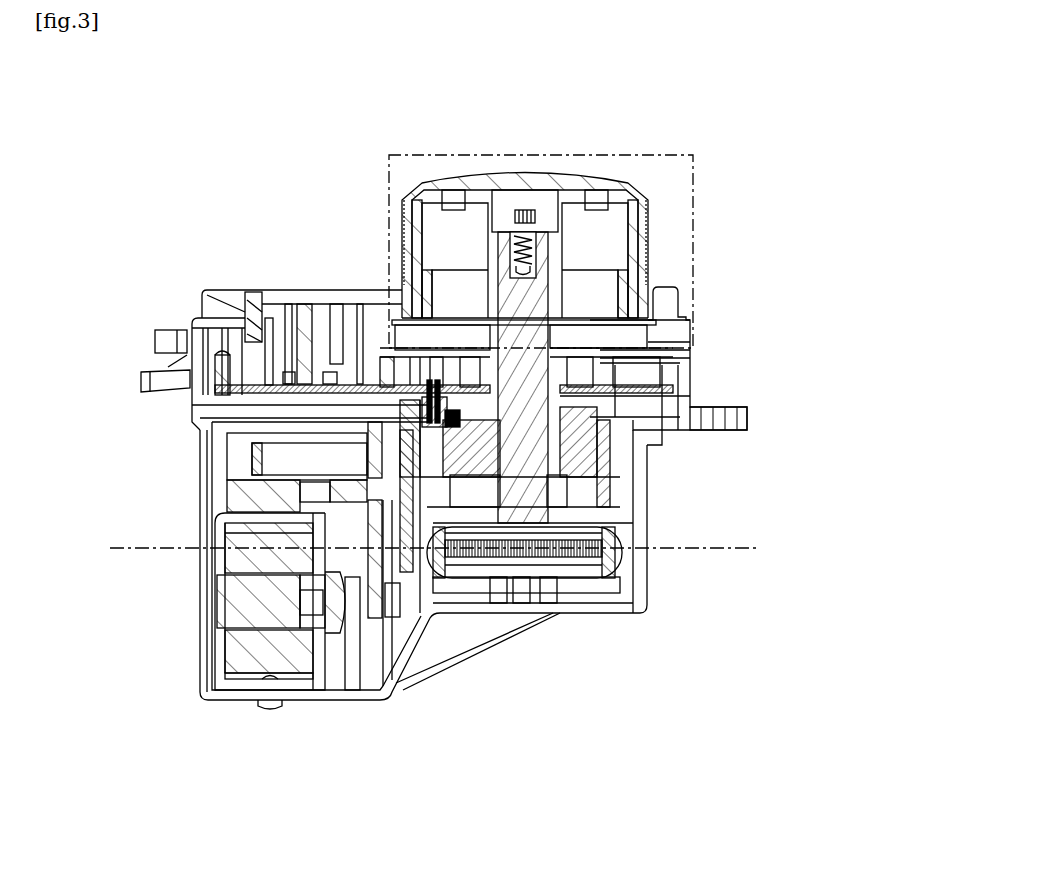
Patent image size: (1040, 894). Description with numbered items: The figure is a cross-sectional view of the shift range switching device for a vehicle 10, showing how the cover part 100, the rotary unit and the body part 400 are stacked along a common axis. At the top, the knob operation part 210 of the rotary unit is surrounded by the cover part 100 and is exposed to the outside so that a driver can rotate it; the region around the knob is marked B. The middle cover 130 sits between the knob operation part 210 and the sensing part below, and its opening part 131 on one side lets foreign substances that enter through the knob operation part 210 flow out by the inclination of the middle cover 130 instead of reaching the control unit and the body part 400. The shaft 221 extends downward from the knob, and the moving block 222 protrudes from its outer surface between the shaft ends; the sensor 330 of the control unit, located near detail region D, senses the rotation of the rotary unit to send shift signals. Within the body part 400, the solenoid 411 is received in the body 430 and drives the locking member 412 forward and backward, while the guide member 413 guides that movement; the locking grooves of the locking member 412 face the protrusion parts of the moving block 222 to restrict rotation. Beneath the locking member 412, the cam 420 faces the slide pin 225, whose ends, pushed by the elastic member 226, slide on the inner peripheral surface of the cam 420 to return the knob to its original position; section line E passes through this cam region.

The shift range switching device for a vehicle 10 is at (246, 72).
The cover part 100 is at (216, 282).
The middle cover 130 is at (620, 350).
The opening part 131 is at (680, 362).
The knob operation part 210 is at (421, 164).
The shaft 221 is at (541, 283).
The moving block 222 is at (588, 450).
The slide pin 225 is at (625, 560).
The elastic member 226 is at (526, 565).
The sensor 330 is at (440, 398).
The body part 400 is at (183, 602).
The solenoid 411 is at (237, 660).
The locking member 412 is at (350, 618).
The guide member 413 is at (256, 458).
The cam 420 is at (640, 562).
The body 430 is at (207, 630).
The knob assembly region B is at (542, 155).
The detail region D is at (428, 392).
The section line E is at (130, 505).